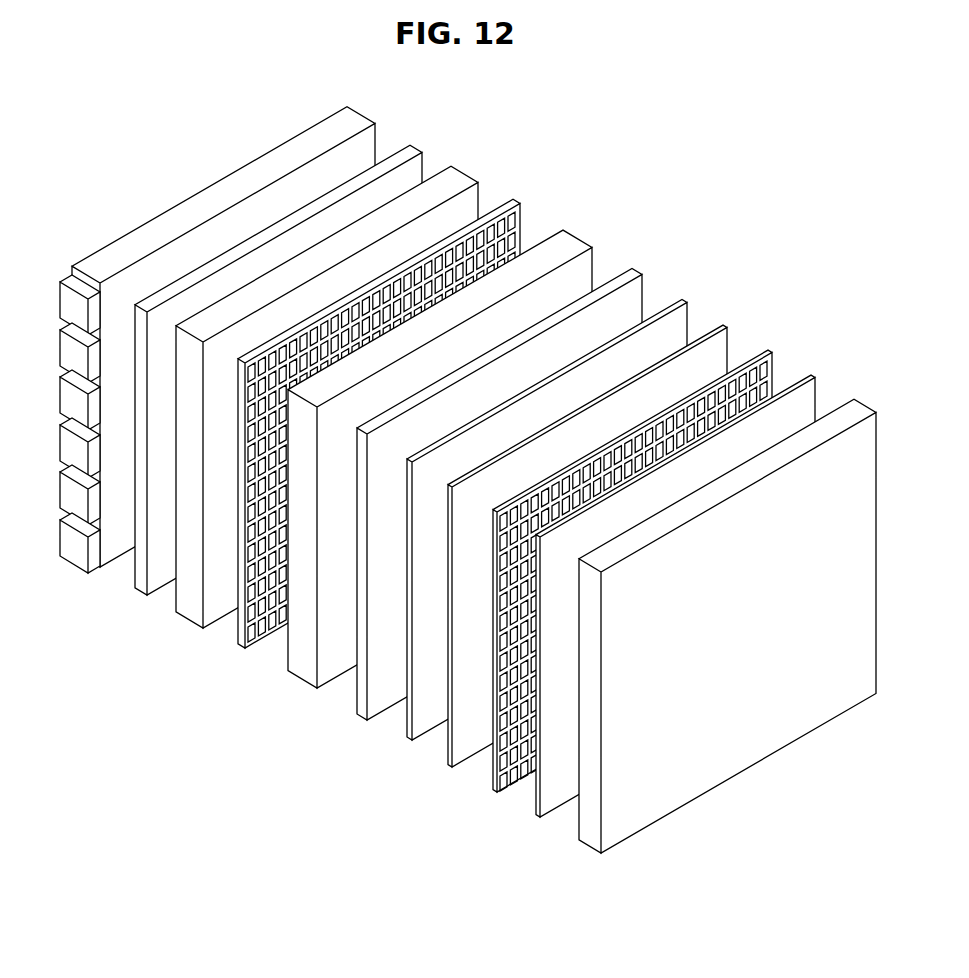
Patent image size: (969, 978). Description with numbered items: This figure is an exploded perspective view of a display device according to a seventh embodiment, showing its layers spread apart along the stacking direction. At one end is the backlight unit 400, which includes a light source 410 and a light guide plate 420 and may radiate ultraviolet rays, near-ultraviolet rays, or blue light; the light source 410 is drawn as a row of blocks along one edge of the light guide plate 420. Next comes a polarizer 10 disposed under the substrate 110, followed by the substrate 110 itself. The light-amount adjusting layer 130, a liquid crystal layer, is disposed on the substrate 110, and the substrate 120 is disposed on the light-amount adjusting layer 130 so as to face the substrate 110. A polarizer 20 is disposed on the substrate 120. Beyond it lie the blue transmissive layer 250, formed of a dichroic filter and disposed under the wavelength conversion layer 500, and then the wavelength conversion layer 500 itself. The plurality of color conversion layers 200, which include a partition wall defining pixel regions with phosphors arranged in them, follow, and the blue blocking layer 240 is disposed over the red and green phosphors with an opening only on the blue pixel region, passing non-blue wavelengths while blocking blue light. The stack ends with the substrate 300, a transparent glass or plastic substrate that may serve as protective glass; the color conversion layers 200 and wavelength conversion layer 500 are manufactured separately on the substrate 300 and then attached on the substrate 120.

The backlight unit 400 is at (120, 158).
The light source 410 is at (67, 300).
The light guide plate 420 is at (127, 248).
The polarizer 10 is at (142, 578).
The substrate 110 is at (190, 606).
The light-amount adjusting layer 130 is at (242, 633).
The substrate 120 is at (297, 667).
The polarizer 20 is at (357, 717).
The blue transmissive layer 250 is at (405, 745).
The wavelength conversion layer 500 is at (450, 758).
The color conversion layers 200 is at (495, 787).
The blue blocking layer 240 is at (538, 815).
The substrate 300 is at (595, 838).